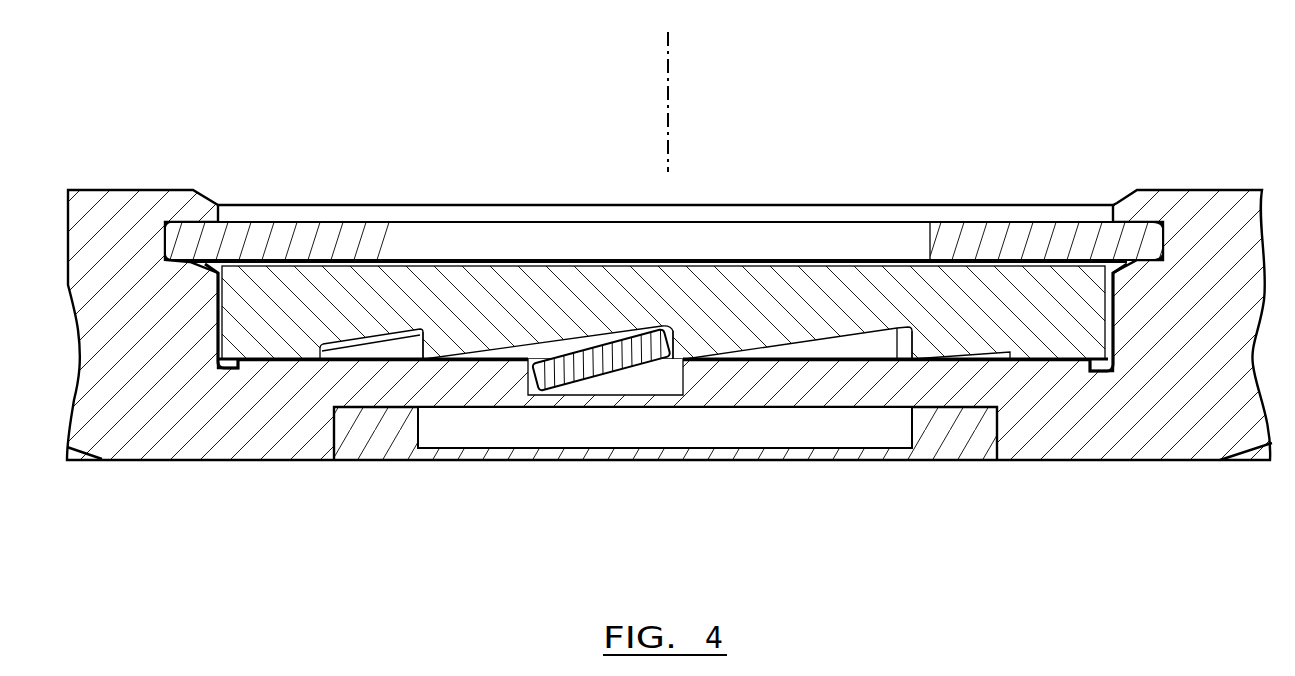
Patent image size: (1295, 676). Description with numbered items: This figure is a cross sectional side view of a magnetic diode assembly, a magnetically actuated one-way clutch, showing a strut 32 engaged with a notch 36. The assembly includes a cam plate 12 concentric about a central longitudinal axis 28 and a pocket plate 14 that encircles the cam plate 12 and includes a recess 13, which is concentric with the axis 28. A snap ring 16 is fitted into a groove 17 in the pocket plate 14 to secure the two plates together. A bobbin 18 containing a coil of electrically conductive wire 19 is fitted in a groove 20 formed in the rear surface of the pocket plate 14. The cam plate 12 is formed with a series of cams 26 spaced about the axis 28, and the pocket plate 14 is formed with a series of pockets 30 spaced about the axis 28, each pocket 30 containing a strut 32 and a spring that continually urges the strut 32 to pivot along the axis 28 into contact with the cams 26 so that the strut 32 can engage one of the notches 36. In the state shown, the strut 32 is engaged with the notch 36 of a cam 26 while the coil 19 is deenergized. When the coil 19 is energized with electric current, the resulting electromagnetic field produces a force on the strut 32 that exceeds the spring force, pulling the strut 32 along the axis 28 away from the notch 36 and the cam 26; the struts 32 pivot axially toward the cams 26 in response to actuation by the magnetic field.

The cam plate 12 is at (775, 318).
The recess 13 is at (219, 312).
The pocket plate 14 is at (157, 353).
The snap ring 16 is at (1014, 237).
The groove 17 is at (1130, 242).
The bobbin 18 is at (384, 437).
The coil of electrically conductive wire 19 is at (793, 432).
The groove 20 is at (998, 445).
The cam 26 is at (357, 340).
The central longitudinal axis 28 is at (670, 73).
The pocket 30 is at (648, 388).
The strut 32 is at (610, 370).
The notch 36 is at (425, 336).